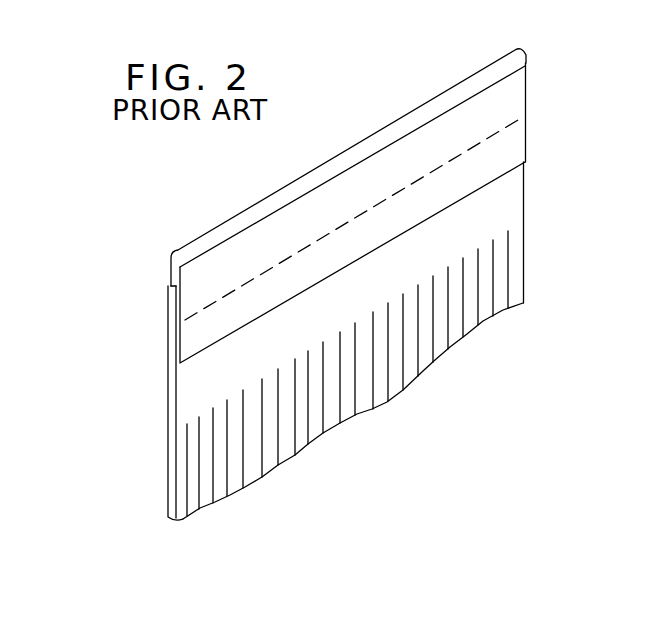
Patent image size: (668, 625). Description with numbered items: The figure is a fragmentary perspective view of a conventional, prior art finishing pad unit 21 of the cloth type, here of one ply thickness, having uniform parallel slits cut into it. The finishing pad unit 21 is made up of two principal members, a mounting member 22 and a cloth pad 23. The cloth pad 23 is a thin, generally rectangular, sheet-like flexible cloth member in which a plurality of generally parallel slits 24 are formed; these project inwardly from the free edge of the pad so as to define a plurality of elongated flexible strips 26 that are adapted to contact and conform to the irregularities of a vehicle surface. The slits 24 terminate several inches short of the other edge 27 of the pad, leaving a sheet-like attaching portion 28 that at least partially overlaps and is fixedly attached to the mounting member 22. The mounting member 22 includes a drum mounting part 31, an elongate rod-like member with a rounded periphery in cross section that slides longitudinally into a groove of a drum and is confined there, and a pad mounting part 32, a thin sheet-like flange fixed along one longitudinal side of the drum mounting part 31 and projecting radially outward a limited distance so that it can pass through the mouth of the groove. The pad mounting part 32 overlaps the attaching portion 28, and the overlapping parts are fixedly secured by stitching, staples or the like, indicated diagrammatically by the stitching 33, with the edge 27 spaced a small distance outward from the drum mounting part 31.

The finishing pad unit 21 is at (597, 118).
The mounting member 22 is at (527, 79).
The cloth pad 23 is at (526, 258).
The slits 24 is at (436, 352).
The elongated flexible strips 26 is at (303, 442).
The other edge of the pad member 27 is at (170, 286).
The attaching portion 28 is at (188, 382).
The drum mounting part 31 is at (390, 121).
The pad mounting part 32 is at (197, 337).
The stitching 33 is at (238, 289).